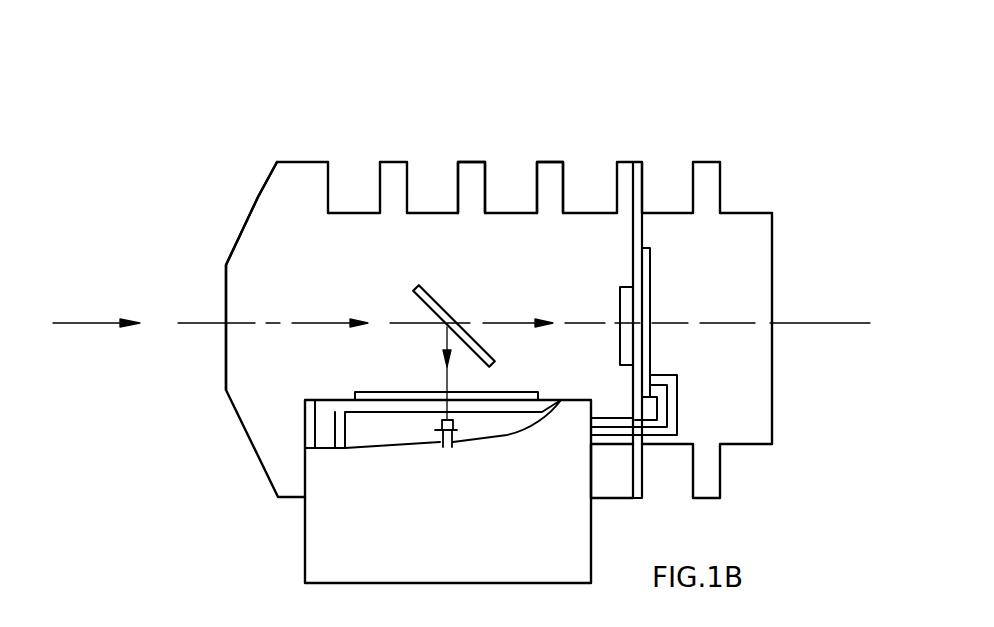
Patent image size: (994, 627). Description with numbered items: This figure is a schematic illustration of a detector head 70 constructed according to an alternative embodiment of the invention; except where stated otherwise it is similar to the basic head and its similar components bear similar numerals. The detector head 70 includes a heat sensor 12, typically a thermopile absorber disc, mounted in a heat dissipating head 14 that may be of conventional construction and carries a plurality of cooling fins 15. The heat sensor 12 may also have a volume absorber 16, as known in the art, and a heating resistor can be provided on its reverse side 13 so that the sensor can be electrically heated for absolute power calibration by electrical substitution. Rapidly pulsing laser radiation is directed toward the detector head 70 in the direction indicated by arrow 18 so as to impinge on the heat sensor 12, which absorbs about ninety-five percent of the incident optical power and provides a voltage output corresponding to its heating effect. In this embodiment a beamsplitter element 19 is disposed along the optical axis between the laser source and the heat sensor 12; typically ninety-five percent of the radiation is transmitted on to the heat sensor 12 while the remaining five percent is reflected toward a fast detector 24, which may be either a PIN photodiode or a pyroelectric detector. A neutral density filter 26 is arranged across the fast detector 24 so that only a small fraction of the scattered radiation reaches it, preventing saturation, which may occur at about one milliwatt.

The heat sensor 12 is at (650, 278).
The reverse side 13 is at (679, 338).
The heat dissipating head 14 is at (258, 197).
The cooling fins 15 is at (470, 162).
The volume absorber 16 is at (618, 293).
The arrow 18 is at (75, 325).
The beamsplitter element 19 is at (432, 293).
The fast detector 24 is at (453, 432).
The neutral density filter 26 is at (380, 392).
The detector head 70 is at (740, 124).